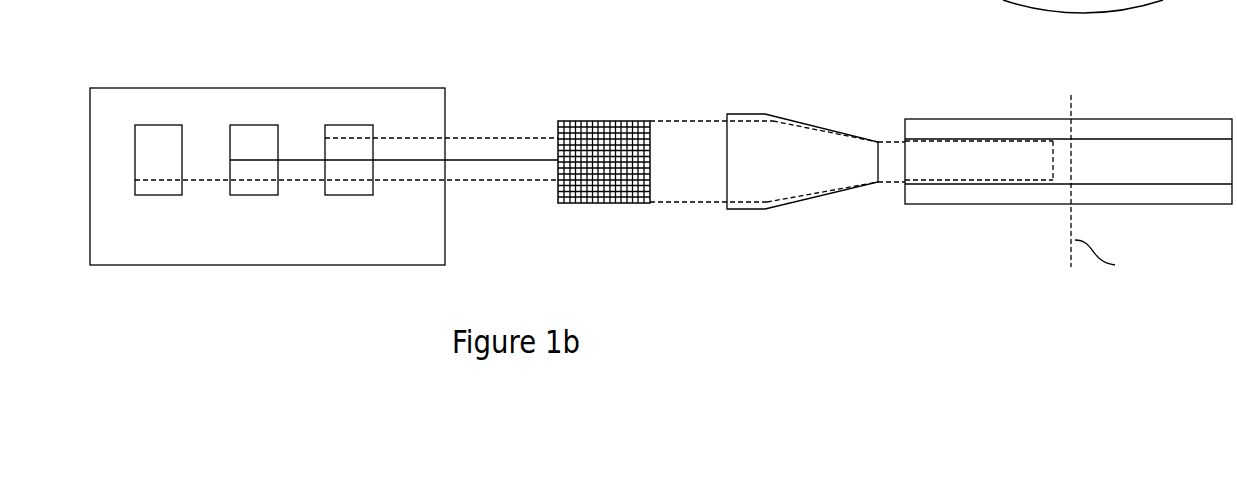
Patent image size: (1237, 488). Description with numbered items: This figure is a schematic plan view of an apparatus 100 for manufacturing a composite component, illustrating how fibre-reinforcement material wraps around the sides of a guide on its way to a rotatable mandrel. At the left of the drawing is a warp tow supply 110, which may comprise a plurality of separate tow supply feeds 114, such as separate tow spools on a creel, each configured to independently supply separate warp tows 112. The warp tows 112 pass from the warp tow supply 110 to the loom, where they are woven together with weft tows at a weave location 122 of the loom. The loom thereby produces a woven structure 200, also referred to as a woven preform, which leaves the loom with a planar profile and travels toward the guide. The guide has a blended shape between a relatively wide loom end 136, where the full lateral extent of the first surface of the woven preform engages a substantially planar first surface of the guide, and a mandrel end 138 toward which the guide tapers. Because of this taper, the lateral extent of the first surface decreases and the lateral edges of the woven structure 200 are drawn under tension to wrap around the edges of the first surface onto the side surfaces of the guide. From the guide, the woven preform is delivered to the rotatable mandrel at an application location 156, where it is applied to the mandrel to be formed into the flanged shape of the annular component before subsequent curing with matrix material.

The apparatus 100 is at (137, 23).
The warp tow supply 110 is at (173, 88).
The warp tows 112 is at (395, 138).
The tow supply feeds 114 is at (258, 125).
The weave location 122 is at (600, 108).
The loom end 136 is at (744, 100).
The mandrel end 138 is at (849, 105).
The application location 156 is at (1045, 175).
The woven structure 200 is at (679, 121).